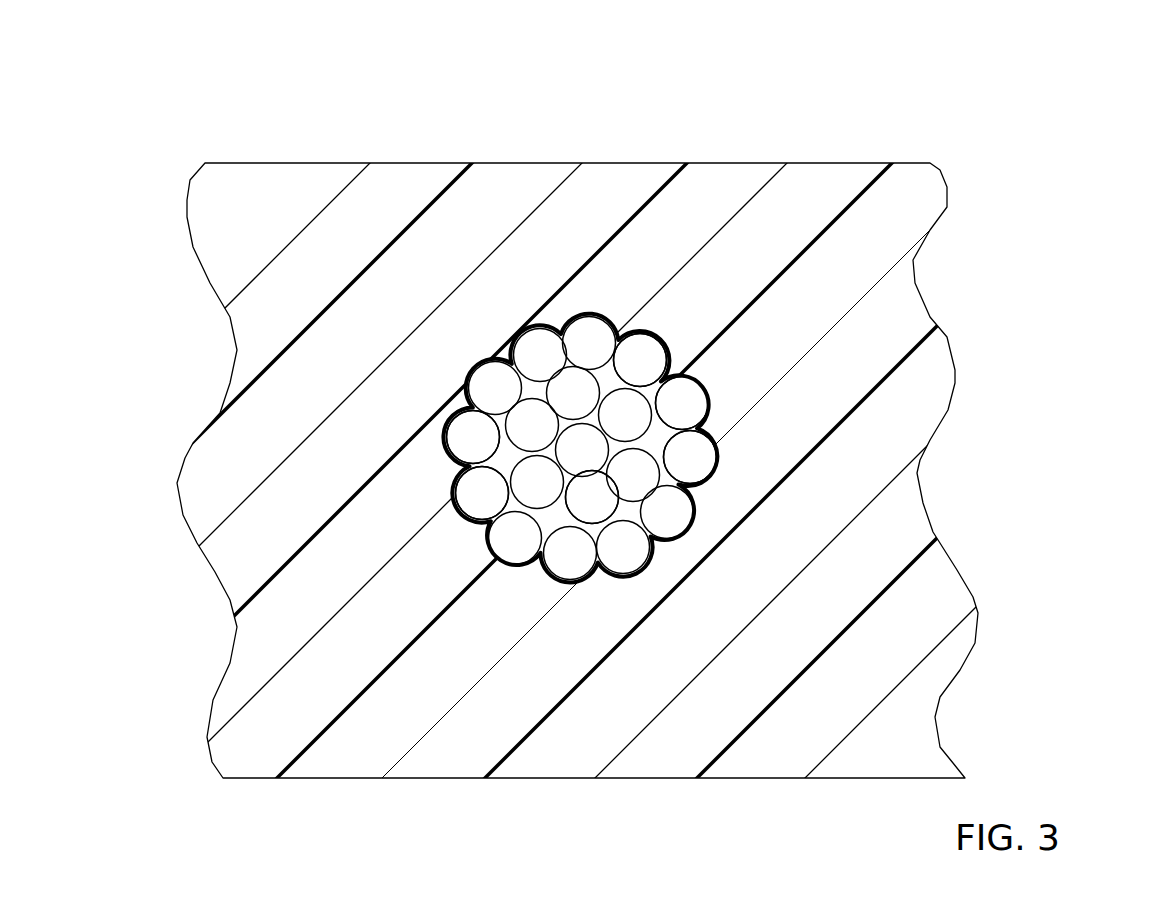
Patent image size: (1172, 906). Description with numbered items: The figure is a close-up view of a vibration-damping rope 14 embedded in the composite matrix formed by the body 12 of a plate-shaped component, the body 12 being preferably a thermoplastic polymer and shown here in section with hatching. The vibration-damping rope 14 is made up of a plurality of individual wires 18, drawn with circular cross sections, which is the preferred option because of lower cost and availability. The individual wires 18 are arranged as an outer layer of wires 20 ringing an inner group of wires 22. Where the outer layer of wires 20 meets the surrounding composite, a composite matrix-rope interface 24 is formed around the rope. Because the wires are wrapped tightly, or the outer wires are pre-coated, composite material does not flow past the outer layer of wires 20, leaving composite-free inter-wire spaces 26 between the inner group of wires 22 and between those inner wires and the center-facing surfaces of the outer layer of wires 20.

The body 12 is at (840, 198).
The vibration-damping rope 14 is at (600, 360).
The individual wires 18 is at (455, 428).
The outer layer of wires 20 is at (483, 492).
The inner group of wires 22 is at (635, 375).
The composite matrix-rope interface 24 is at (702, 383).
The composite-free inter-wire spaces 26 is at (537, 397).